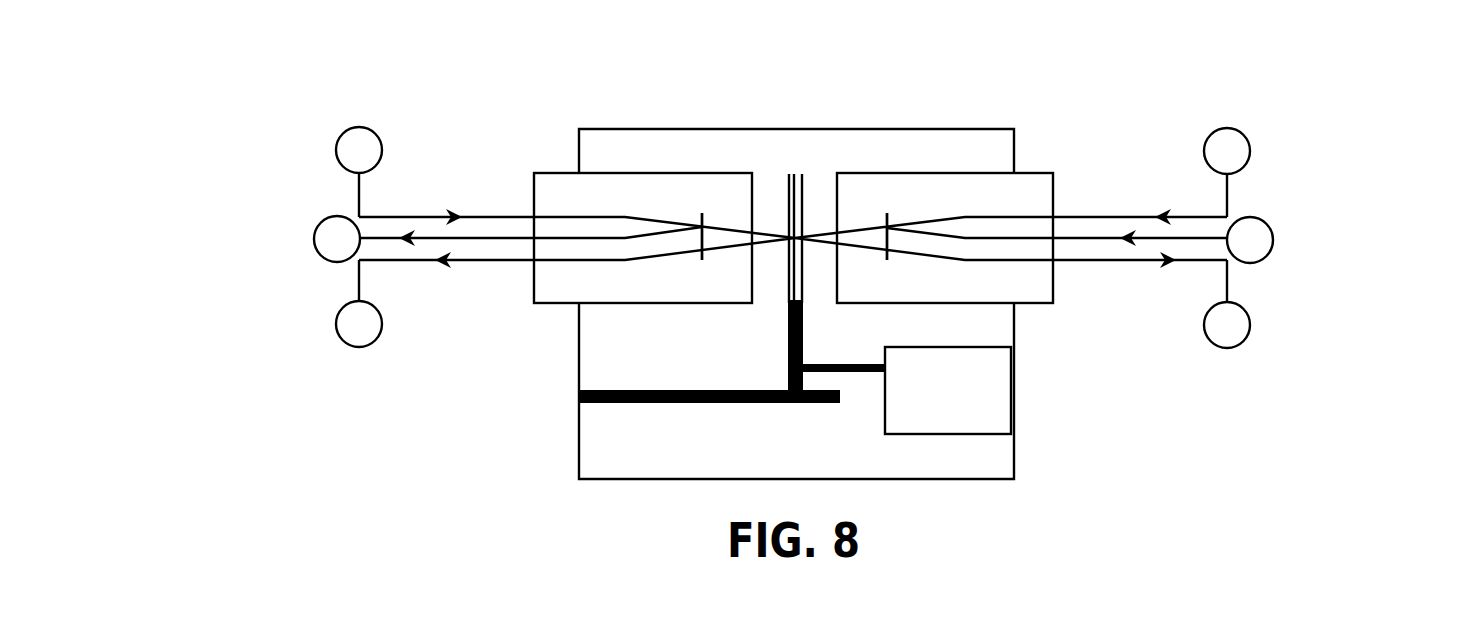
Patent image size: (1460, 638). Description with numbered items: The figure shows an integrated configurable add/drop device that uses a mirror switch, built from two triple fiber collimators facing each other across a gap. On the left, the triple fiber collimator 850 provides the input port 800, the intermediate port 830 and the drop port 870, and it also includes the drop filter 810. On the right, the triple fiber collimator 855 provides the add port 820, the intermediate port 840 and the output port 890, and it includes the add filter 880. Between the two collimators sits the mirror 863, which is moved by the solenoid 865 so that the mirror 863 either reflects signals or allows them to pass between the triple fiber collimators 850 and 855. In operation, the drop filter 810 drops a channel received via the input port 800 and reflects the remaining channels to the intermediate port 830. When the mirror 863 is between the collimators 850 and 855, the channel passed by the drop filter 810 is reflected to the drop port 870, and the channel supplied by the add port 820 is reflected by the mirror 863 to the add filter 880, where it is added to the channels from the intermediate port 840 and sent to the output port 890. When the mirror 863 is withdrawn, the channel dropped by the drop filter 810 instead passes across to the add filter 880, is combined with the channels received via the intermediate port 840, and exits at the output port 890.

The input port 800 is at (340, 135).
The drop filter 810 is at (698, 205).
The add port 820 is at (1243, 132).
The intermediate port 830 is at (314, 238).
The intermediate port 840 is at (1273, 239).
The triple fiber collimator 850 is at (570, 173).
The triple fiber collimator 855 is at (1021, 173).
The mirror 863 is at (788, 303).
The solenoid 865 is at (970, 390).
The drop port 870 is at (339, 337).
The add filter 880 is at (890, 205).
The output port 890 is at (1245, 336).